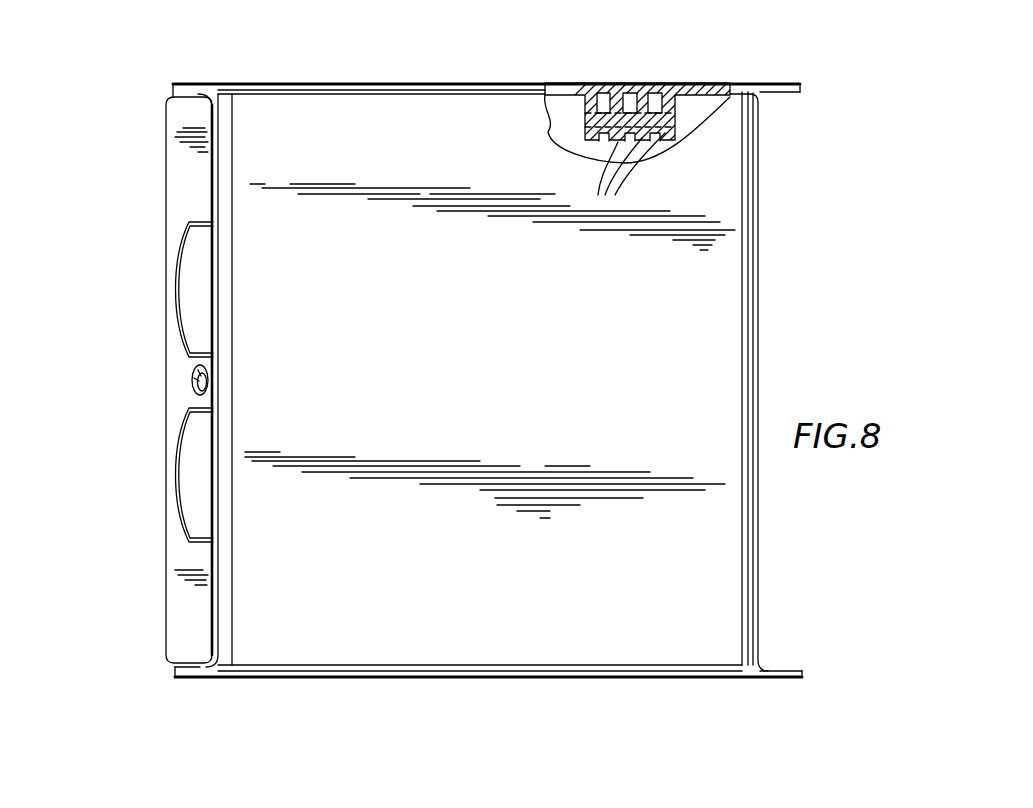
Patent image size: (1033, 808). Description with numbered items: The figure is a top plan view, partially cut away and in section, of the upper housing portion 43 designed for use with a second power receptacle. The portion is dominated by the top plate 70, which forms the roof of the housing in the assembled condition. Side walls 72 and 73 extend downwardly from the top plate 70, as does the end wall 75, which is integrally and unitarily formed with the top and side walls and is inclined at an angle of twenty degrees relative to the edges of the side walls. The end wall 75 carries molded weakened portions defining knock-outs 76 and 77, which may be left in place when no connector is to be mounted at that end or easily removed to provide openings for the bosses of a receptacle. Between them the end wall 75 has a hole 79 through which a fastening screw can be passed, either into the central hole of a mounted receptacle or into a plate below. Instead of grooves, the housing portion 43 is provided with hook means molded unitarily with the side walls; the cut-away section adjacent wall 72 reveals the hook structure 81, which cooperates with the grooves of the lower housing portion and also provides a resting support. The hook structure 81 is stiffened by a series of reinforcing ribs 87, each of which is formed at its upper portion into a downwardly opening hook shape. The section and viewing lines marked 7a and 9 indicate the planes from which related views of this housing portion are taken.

The top plate 70 is at (458, 314).
The side wall 72 is at (314, 82).
The side wall 73 is at (637, 678).
The housing portion 43 is at (331, 690).
The end wall 75 is at (168, 562).
The knock-out 76 is at (198, 473).
The knock-out 77 is at (194, 304).
The hole 79 is at (192, 384).
The hook structure 81 is at (583, 128).
The reinforcing ribs 87 is at (615, 170).
The section line 7a is at (492, 37).
The section line 9 is at (137, 287).